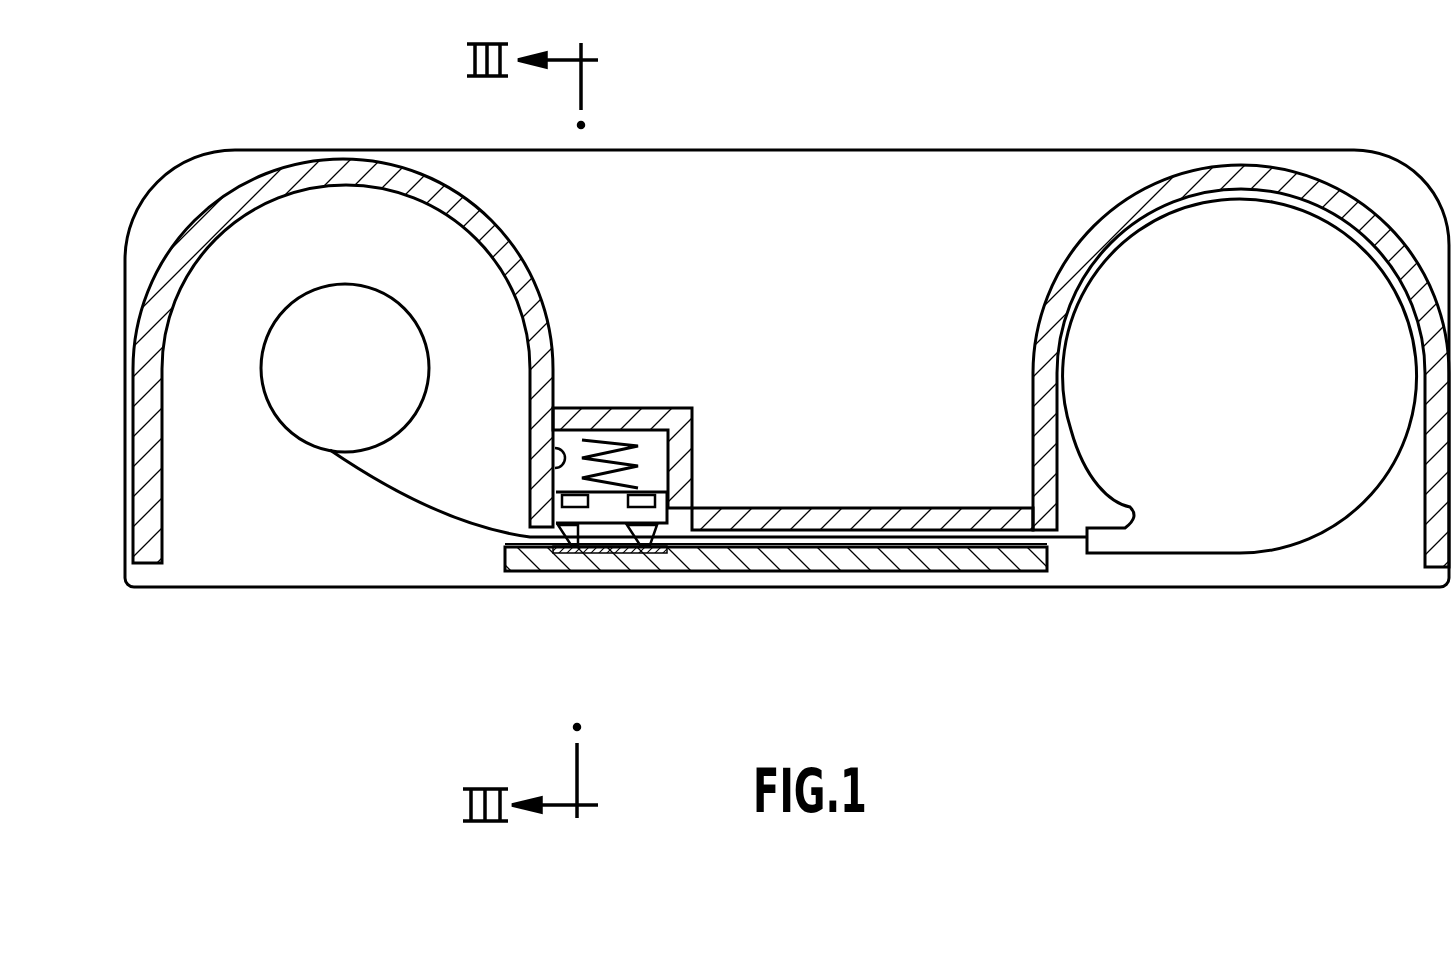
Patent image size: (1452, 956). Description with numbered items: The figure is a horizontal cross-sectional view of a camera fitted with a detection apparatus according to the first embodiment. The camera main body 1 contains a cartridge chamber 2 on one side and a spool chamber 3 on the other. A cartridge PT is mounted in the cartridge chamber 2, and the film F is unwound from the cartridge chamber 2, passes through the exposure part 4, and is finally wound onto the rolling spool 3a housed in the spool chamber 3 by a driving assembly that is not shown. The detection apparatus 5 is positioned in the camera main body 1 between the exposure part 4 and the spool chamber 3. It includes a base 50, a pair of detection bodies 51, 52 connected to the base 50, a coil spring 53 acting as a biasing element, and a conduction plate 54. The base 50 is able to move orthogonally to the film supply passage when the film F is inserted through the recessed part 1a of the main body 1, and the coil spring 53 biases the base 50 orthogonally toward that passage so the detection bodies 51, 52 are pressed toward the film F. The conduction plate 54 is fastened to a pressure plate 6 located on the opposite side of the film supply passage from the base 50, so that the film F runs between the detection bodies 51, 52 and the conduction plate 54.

The camera main body 1 is at (1133, 203).
The recessed part 1a is at (550, 472).
The cartridge chamber 2 is at (1385, 512).
The spool chamber 3 is at (220, 505).
The rolling spool 3a is at (345, 302).
The exposure part 4 is at (876, 527).
The detection apparatus 5 is at (642, 402).
The base 50 is at (650, 515).
The detection body 51 is at (566, 550).
The detection body 52 is at (655, 548).
The coil spring 53 is at (628, 452).
The conduction plate 54 is at (606, 555).
The pressure plate 6 is at (926, 560).
The film F is at (380, 490).
The cartridge PT is at (1228, 535).